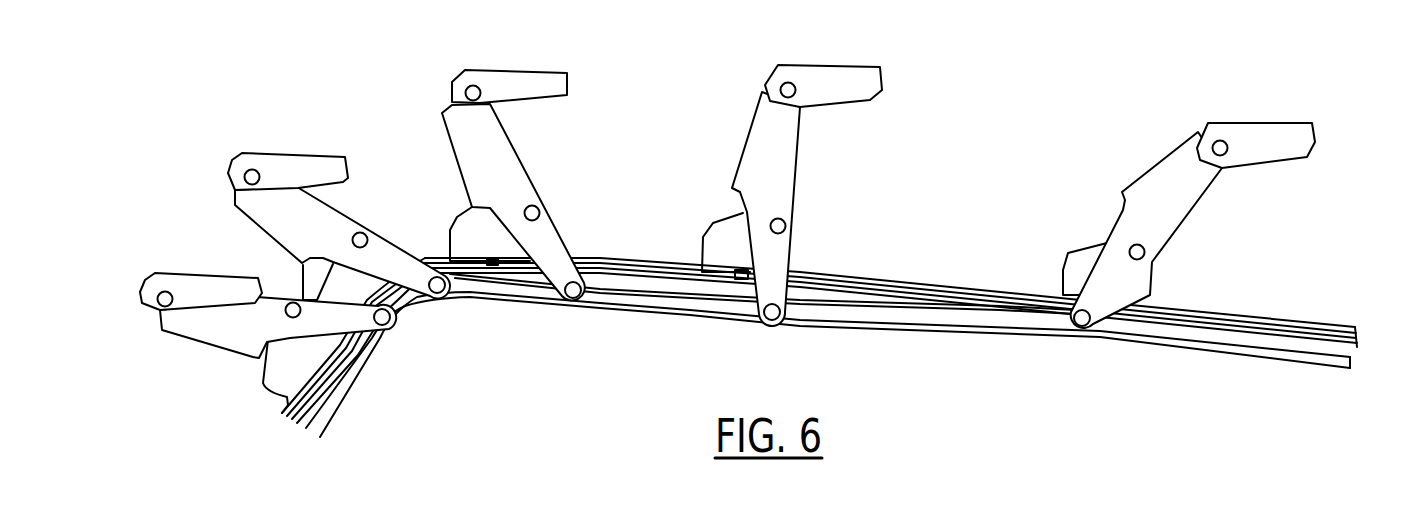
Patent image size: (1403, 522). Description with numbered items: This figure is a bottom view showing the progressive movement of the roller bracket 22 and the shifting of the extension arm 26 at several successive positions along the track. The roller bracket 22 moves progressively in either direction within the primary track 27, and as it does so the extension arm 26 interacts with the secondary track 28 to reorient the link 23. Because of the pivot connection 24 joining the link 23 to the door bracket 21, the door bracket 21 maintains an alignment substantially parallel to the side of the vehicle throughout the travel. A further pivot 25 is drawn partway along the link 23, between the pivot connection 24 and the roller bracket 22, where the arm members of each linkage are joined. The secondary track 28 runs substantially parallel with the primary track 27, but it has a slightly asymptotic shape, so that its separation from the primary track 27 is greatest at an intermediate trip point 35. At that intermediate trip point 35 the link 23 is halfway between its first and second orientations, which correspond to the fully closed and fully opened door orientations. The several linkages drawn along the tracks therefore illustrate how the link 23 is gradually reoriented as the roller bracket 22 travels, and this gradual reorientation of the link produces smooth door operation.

The door bracket 21 is at (510, 70).
The roller bracket 22 is at (463, 213).
The link 23 is at (513, 147).
The pivot connection 24 is at (470, 86).
The pivot pin 25 is at (538, 210).
The extension arm 26 is at (567, 247).
The primary track 27 is at (853, 272).
The secondary track 28 is at (663, 303).
The intermediate trip point 35 is at (770, 328).